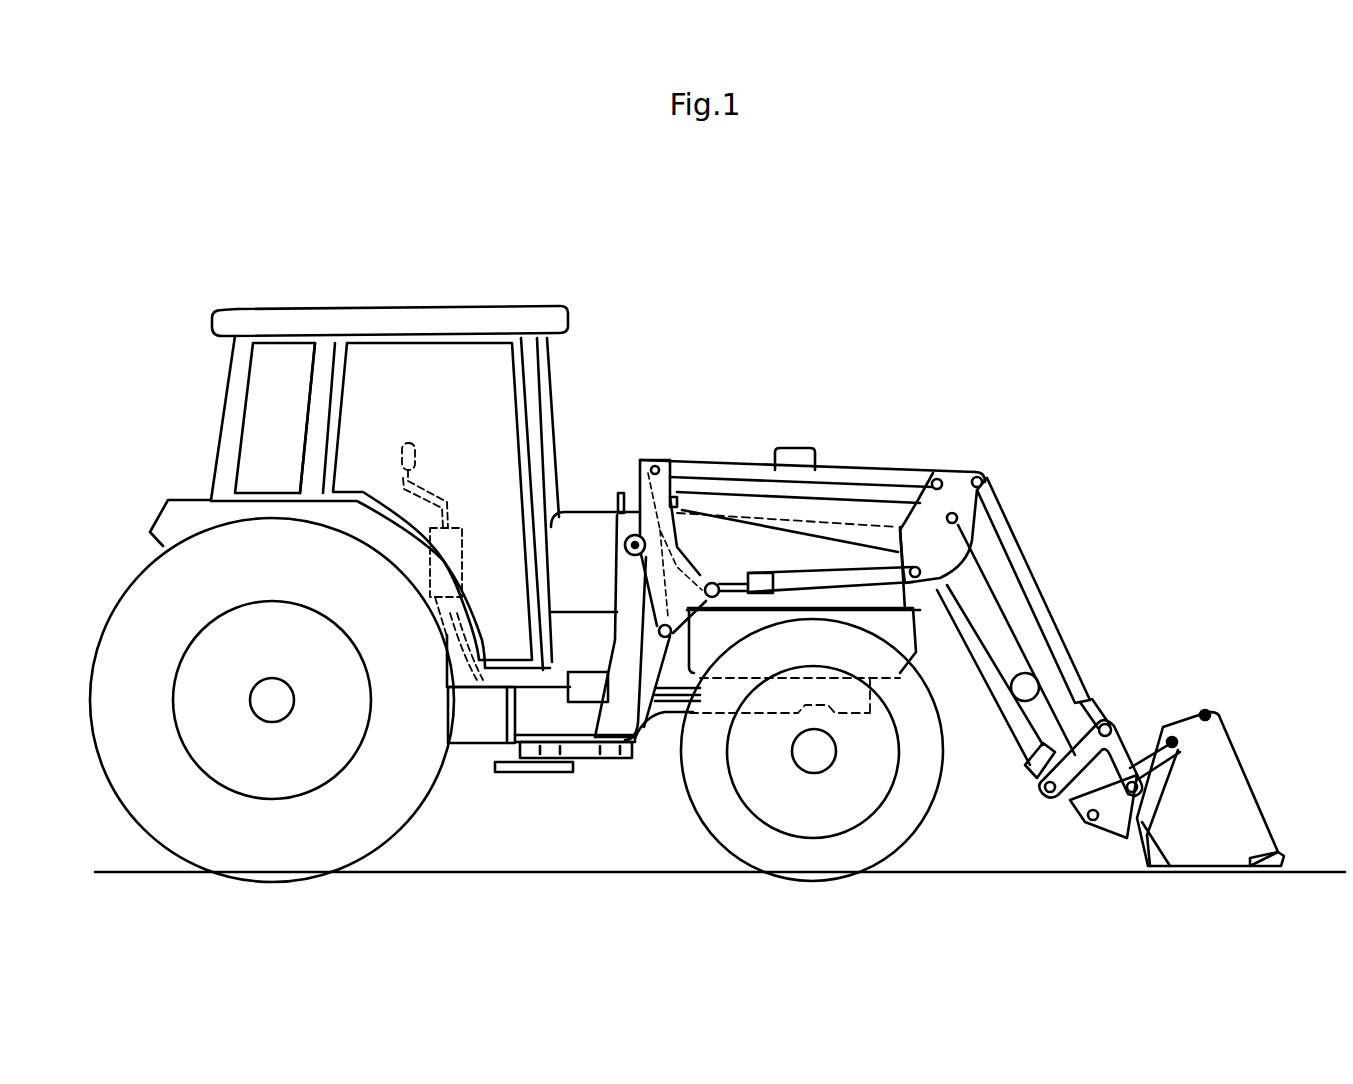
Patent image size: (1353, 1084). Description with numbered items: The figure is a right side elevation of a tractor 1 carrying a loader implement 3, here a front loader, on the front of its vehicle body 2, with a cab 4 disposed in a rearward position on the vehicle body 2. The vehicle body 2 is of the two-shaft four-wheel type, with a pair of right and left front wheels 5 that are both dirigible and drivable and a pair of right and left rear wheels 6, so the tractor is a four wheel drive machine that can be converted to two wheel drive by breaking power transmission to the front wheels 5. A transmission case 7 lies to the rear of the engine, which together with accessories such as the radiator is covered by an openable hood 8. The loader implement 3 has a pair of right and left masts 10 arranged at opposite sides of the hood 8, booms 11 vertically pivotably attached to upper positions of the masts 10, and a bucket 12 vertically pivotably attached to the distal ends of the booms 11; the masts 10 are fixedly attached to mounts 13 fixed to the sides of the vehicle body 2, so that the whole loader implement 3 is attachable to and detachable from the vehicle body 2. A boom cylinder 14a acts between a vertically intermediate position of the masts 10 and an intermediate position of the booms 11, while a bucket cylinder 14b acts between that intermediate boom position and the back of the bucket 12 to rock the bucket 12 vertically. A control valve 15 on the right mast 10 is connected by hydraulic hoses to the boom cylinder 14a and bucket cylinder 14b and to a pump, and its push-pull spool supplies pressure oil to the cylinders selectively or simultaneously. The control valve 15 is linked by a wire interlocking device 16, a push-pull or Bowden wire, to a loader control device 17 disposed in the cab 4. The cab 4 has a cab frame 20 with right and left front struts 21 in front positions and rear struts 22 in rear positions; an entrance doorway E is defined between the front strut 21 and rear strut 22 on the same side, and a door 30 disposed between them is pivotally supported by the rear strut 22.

The tractor 1 is at (1146, 251).
The vehicle body 2 is at (490, 792).
The loader implement 3 is at (1042, 501).
The cab 4 is at (228, 320).
The front wheels 5 is at (860, 853).
The rear wheels 6 is at (290, 845).
The transmission case 7 is at (470, 725).
The hood 8 is at (582, 533).
The masts 10 is at (663, 487).
The booms 11 is at (865, 510).
The bucket 12 is at (1235, 785).
The mounts 13 is at (630, 713).
The boom cylinder 14a is at (763, 578).
The bucket cylinder 14b is at (1040, 592).
The control valve 15 is at (590, 705).
The wire interlocking device 16 is at (505, 705).
The loader control device 17 is at (427, 450).
The cab frame 20 is at (551, 285).
The front struts 21 is at (550, 352).
The rear struts 22 is at (323, 360).
The door 30 is at (405, 368).
The entrance doorway E is at (492, 461).